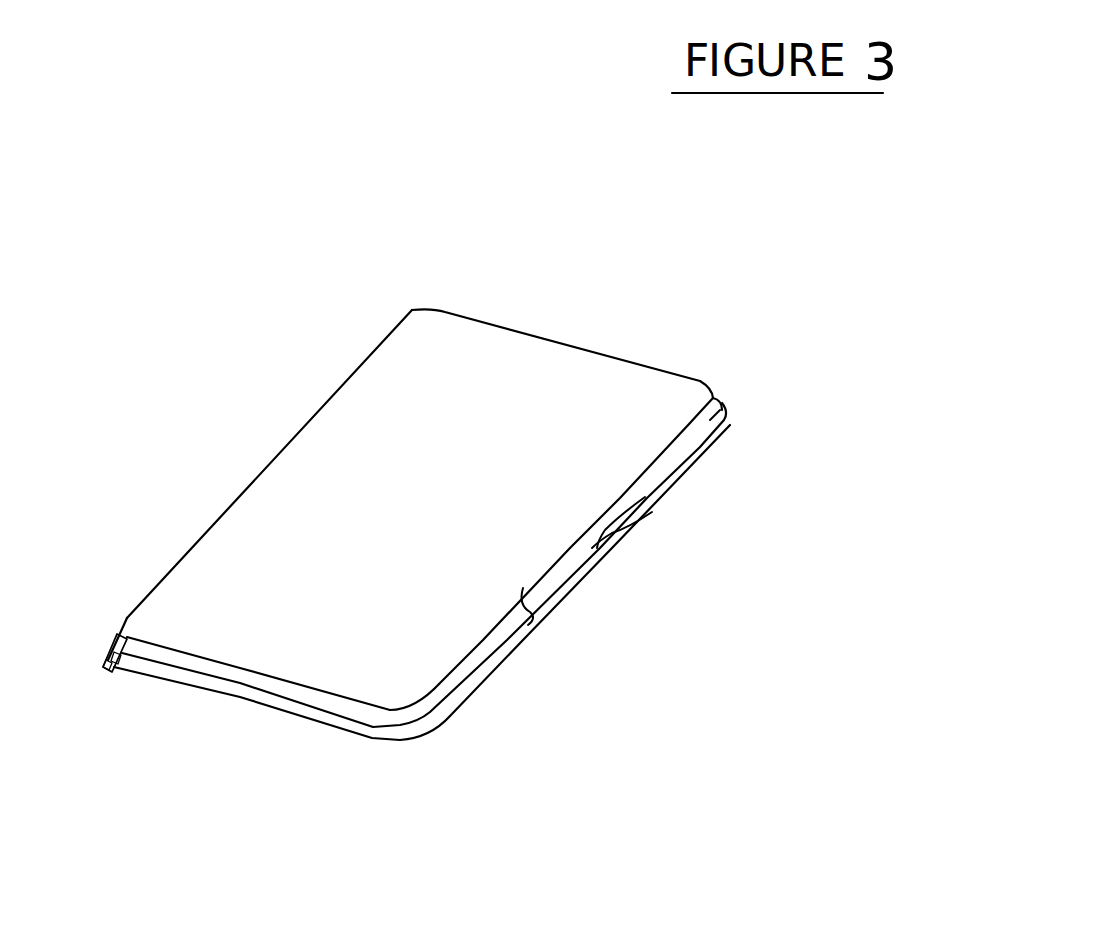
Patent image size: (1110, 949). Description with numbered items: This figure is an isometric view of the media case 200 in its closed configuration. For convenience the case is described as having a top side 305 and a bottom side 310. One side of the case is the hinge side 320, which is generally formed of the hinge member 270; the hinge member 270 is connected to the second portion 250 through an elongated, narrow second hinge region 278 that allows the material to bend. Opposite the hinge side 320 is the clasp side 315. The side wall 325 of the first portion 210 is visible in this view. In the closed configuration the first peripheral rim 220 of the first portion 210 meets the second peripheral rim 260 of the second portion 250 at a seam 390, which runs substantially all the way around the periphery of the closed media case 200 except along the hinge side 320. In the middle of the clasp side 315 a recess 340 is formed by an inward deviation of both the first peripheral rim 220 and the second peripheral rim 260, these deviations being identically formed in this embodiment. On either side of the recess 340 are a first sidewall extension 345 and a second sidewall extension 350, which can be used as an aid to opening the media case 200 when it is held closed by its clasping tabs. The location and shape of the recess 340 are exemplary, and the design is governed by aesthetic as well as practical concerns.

The media case 200 is at (812, 200).
The top side 305 is at (597, 308).
The hinge side 320 is at (221, 438).
The side wall 325 is at (180, 588).
The first peripheral rim 220 is at (718, 398).
The second peripheral rim 260 is at (728, 425).
The clasp side 315 is at (632, 590).
The recess 340 is at (613, 530).
The second sidewall extension 350 is at (567, 588).
The first sidewall extension 345 is at (526, 615).
The first portion 210 is at (430, 706).
The second portion 250 is at (400, 730).
The seam 390 is at (385, 718).
The bottom side 310 is at (226, 758).
The hinge member 270 is at (107, 647).
The second hinge region 278 is at (108, 660).